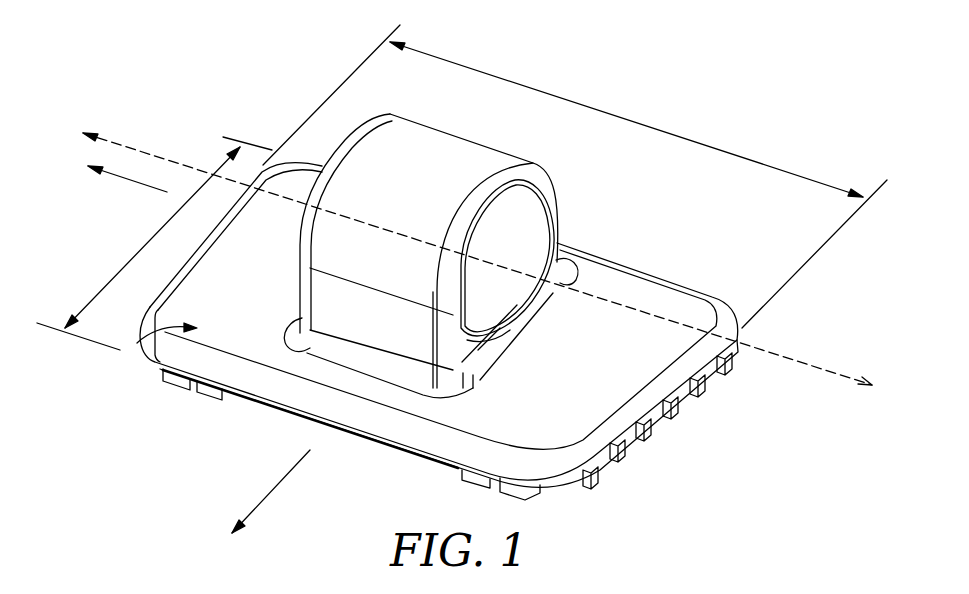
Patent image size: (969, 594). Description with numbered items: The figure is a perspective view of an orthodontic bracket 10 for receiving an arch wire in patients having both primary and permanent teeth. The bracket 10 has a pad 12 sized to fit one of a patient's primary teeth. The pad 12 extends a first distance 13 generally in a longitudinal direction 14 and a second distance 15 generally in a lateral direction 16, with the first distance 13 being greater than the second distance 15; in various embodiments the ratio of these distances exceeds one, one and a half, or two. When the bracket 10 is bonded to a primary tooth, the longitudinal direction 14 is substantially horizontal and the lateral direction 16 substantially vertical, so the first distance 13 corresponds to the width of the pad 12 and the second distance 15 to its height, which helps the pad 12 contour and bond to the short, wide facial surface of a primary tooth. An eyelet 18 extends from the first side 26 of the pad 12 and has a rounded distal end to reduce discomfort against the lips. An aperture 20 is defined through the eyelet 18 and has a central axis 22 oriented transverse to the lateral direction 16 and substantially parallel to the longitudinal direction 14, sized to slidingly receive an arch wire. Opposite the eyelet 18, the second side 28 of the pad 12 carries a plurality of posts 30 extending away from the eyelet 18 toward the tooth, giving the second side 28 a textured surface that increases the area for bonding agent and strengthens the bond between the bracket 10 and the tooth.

The orthodontic bracket 10 is at (753, 74).
The pad 12 is at (637, 358).
The first distance 13 is at (558, 96).
The longitudinal direction 14 is at (120, 178).
The second distance 15 is at (120, 272).
The lateral direction 16 is at (270, 493).
The eyelet 18 is at (443, 150).
The aperture 20 is at (514, 243).
The central axis 22 is at (778, 352).
The first side 26 is at (137, 343).
The second side 28 is at (212, 395).
The posts 30 is at (652, 435).